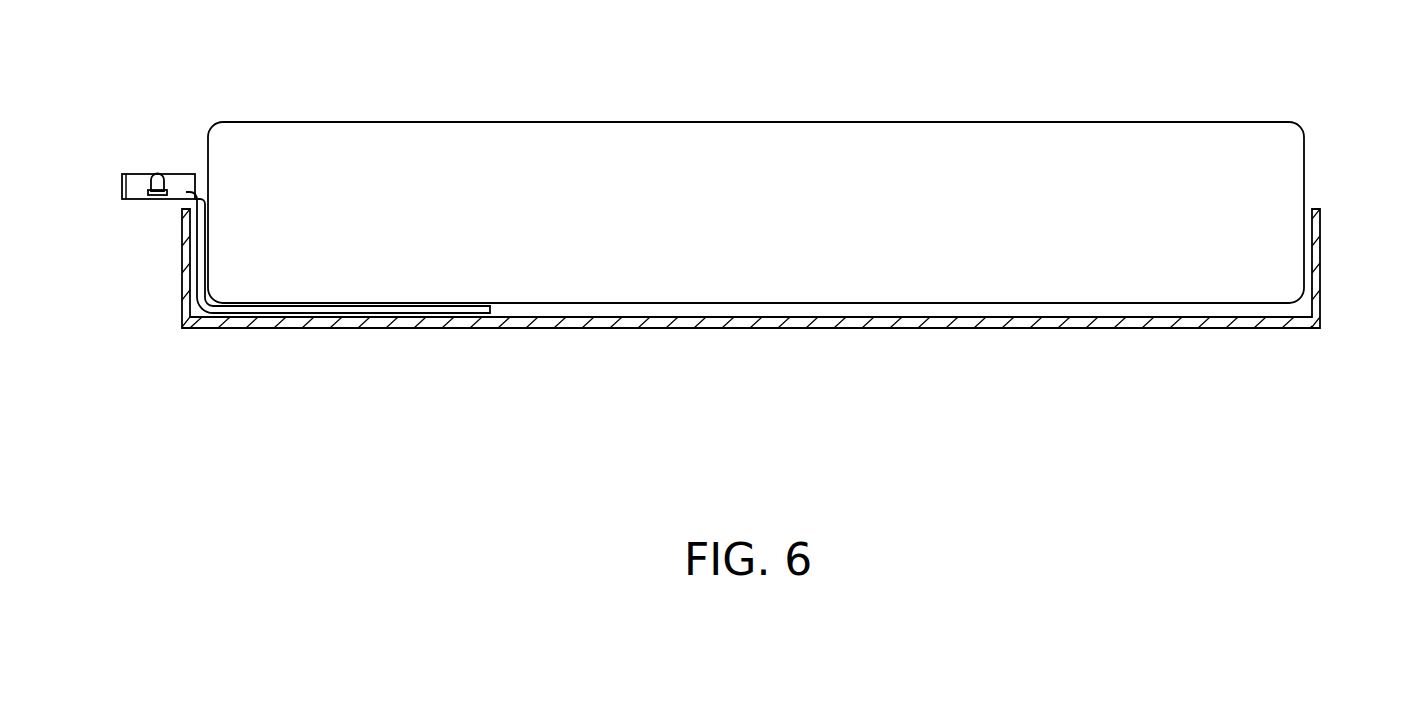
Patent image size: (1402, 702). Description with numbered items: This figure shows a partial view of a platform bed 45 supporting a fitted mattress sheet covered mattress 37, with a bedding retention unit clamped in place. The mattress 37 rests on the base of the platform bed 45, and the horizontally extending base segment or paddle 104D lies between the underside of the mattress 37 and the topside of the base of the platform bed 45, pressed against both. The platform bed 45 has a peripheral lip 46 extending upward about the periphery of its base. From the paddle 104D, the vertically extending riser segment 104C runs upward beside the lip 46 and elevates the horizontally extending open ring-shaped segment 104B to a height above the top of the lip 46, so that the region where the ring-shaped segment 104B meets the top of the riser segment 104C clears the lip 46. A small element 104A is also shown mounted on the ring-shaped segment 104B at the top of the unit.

The fitted mattress sheet covered mattress 37 is at (679, 121).
The platform bed 45 is at (805, 328).
The peripheral lip 46 is at (183, 297).
The sensor 104A is at (150, 172).
The horizontally extending open ring-shaped segment 104B is at (118, 188).
The vertically extending riser segment 104C is at (198, 265).
The horizontally extending base segment or paddle 104D is at (374, 310).